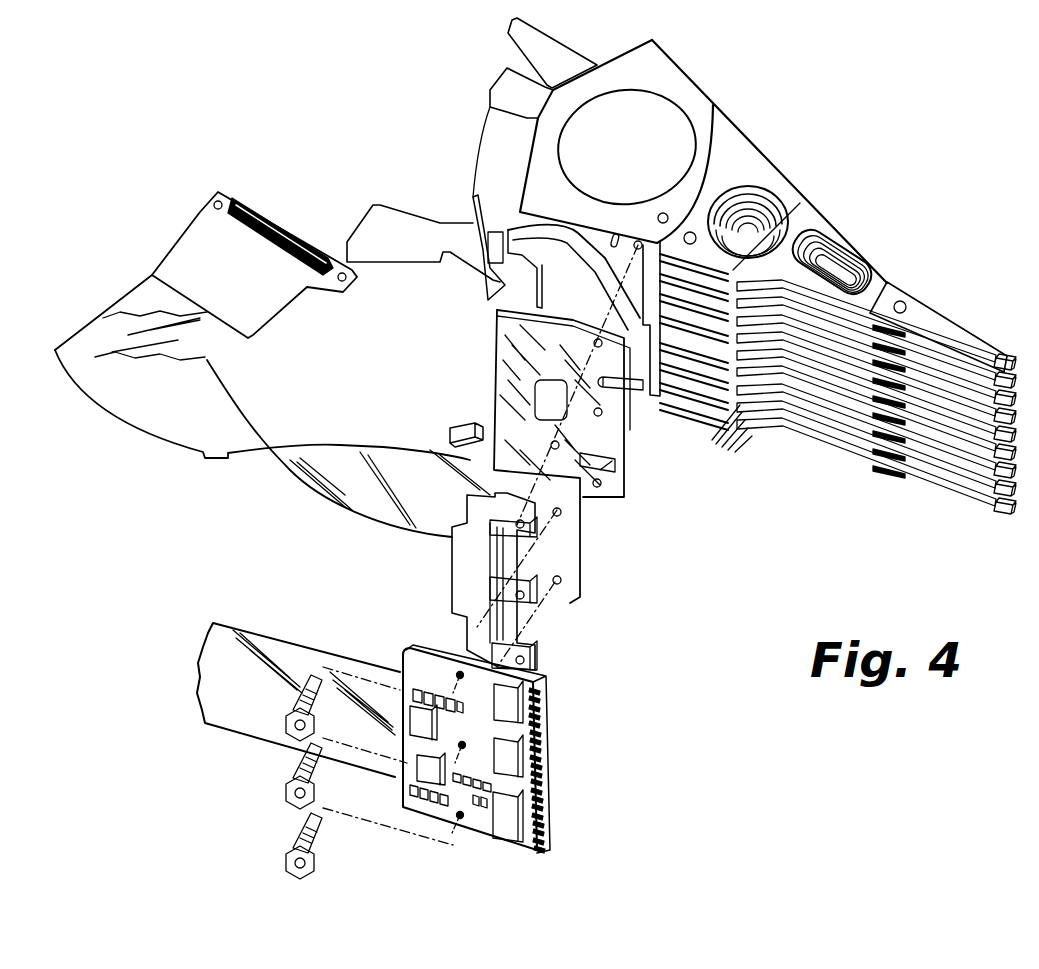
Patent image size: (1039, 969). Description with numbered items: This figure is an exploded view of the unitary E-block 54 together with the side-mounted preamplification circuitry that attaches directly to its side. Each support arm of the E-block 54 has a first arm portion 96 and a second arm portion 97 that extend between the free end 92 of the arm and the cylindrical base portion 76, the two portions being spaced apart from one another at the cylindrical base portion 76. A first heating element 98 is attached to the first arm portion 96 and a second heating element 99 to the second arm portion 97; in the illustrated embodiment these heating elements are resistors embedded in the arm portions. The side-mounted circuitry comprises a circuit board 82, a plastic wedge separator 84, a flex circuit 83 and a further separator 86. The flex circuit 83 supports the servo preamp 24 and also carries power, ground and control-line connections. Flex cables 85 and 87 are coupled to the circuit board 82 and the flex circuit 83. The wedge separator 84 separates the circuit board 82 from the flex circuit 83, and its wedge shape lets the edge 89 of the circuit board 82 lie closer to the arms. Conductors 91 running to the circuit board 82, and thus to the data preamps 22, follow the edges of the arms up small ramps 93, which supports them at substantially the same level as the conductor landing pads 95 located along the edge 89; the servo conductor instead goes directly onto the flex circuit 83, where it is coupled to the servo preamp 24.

The unitary E-block 54 is at (706, 79).
The cylindrical base portion 76 is at (697, 132).
The second arm portion 97 is at (773, 182).
The first arm portion 96 is at (790, 215).
The second heating element 99 is at (835, 238).
The first heating element 98 is at (847, 290).
The free end 92 is at (893, 280).
The small ramps 93 is at (758, 435).
The conductors 91 is at (729, 445).
The flex cable 85 is at (150, 433).
The servo preamp 24 is at (448, 437).
The separator 86 is at (629, 445).
The flex circuit 83 is at (583, 563).
The plastic wedge separator 84 is at (537, 655).
The flex cable 87 is at (215, 625).
The data preamps 22 is at (417, 723).
The circuit board 82 is at (556, 738).
The edge 89 is at (552, 823).
The conductor landing pads 95 is at (552, 840).